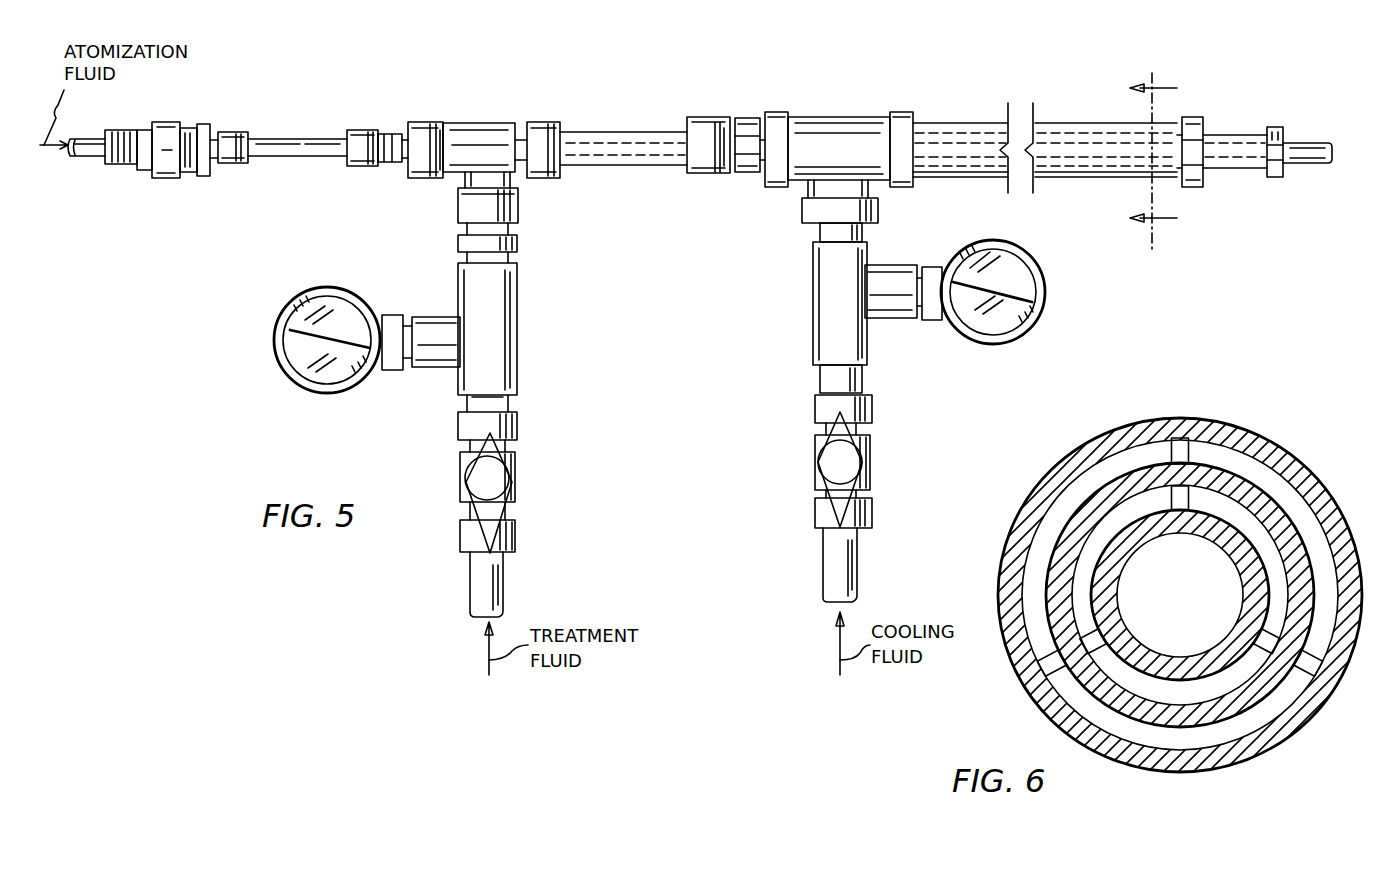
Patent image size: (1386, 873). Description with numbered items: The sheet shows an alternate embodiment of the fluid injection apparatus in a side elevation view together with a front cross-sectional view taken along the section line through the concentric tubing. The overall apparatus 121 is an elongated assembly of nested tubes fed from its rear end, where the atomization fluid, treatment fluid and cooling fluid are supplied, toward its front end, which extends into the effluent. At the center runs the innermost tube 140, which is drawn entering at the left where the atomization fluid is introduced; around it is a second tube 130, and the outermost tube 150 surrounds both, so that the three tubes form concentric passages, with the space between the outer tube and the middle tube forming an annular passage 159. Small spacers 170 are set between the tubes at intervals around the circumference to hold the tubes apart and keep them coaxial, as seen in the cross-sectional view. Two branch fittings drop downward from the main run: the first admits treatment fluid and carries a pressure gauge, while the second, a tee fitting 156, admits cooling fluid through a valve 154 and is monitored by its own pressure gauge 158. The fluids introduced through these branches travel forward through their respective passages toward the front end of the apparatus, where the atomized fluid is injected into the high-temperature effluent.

In FIG. 5, the nozzle assembly 121 is at (980, 98).
In FIG. 6, the nozzle assembly 121 is at (1260, 430).
In FIG. 5, the intermediate tube 130 is at (620, 167).
In FIG. 6, the intermediate tube 130 is at (1097, 550).
In FIG. 5, the inner atomization fluid tube 140 is at (90, 160).
In FIG. 6, the inner atomization fluid tube 140 is at (1208, 660).
In FIG. 5, the outer tube 150 is at (1108, 122).
In FIG. 6, the outer tube 150 is at (1330, 496).
In FIG. 5, the cooling fluid valve 154 is at (812, 462).
In FIG. 5, the tee fitting 156 is at (800, 182).
In FIG. 5, the pressure gauge 158 is at (1047, 310).
In FIG. 6, the annular cooling passage 159 is at (1076, 488).
In FIG. 6, the spacers 170 is at (1168, 472).